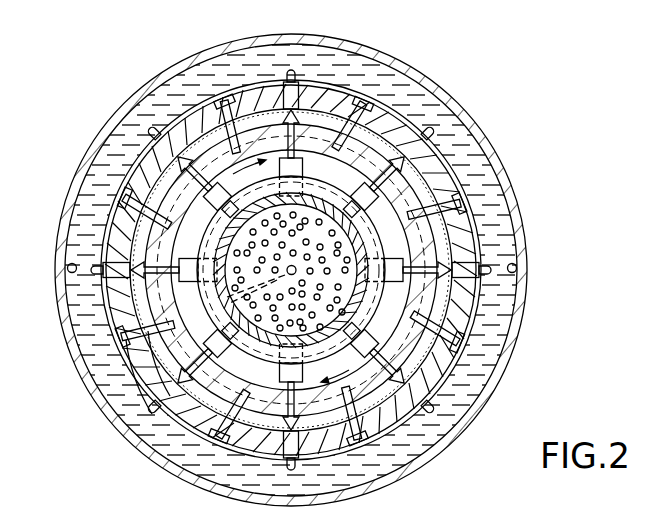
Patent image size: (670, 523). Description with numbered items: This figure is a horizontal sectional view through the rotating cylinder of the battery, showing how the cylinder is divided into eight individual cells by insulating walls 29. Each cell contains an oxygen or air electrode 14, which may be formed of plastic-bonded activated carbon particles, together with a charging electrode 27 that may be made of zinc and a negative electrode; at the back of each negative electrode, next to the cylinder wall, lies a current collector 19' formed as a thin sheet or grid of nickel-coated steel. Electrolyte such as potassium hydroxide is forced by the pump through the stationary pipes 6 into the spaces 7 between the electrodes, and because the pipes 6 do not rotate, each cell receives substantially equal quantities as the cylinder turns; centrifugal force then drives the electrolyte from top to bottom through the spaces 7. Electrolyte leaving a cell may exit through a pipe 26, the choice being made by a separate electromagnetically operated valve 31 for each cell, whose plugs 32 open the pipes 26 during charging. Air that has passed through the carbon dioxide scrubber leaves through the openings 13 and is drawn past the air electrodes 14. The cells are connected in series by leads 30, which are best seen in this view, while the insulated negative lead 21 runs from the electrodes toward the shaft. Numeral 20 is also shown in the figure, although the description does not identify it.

The pipes 6 is at (517, 265).
The spaces between the electrodes 7 is at (153, 373).
The openings 13 is at (311, 272).
The oxygen or air electrode 14 is at (372, 147).
The current collector 19' is at (225, 170).
The blade root 20 is at (170, 312).
The negative lead 21 is at (225, 350).
The pipe 26 is at (150, 129).
The charging electrode 27 is at (420, 200).
The insulating walls 29 is at (355, 440).
The leads 30 is at (248, 435).
The electromagnetically operated valve 31 is at (185, 277).
The plugs 32 is at (447, 268).